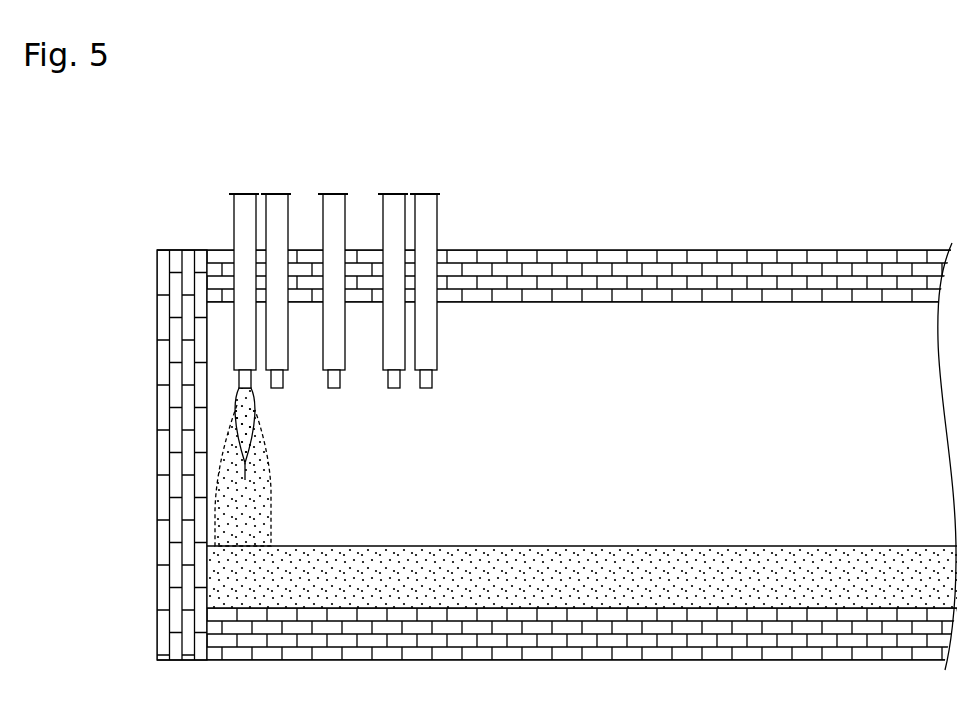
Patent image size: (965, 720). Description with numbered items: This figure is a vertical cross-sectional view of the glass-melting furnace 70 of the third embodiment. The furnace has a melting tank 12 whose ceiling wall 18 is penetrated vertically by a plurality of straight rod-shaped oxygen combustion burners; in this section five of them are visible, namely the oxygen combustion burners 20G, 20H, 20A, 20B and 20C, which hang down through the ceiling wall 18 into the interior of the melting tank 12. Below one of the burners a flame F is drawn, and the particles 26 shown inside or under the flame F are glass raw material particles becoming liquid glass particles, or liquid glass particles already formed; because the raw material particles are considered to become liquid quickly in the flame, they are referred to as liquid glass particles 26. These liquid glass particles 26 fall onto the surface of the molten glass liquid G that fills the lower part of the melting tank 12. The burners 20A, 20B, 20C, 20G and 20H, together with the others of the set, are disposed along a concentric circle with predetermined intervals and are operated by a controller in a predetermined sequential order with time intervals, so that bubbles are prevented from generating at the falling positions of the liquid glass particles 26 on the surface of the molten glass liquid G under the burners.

The glass-melting furnace 70 is at (557, 390).
The melting tank 12 is at (684, 251).
The ceiling wall 18 is at (548, 294).
The oxygen combustion burner 20G is at (244, 205).
The oxygen combustion burner 20H is at (275, 205).
The oxygen combustion burner 20A is at (334, 208).
The oxygen combustion burner 20B is at (395, 208).
The oxygen combustion burner 20C is at (438, 212).
The liquid glass particles 26 is at (258, 460).
The flame F is at (257, 400).
The molten glass liquid G is at (543, 588).